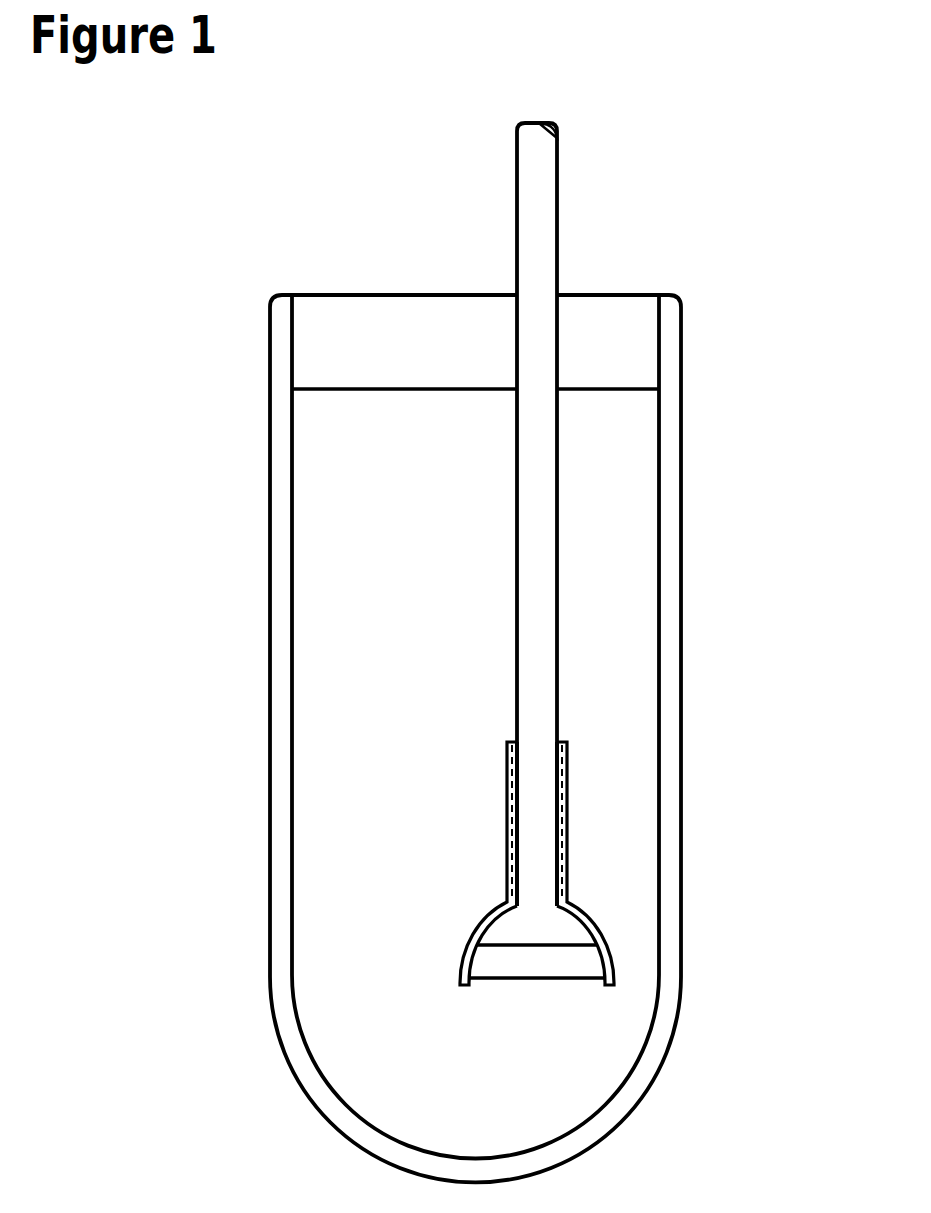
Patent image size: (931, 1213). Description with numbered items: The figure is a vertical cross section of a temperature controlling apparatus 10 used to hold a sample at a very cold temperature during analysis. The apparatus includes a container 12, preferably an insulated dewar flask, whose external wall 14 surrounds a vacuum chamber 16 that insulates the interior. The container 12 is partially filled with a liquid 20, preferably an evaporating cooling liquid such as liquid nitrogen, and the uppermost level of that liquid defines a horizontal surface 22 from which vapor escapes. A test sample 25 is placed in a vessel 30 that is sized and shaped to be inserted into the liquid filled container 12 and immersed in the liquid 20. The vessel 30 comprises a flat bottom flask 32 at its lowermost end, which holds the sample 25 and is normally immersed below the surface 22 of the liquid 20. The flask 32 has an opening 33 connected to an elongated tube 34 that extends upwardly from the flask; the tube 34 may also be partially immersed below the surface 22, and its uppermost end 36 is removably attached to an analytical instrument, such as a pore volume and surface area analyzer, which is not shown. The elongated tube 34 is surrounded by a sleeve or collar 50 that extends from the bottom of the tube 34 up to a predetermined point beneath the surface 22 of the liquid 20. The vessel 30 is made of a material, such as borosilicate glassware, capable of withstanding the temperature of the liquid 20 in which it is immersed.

The temperature controlling apparatus 10 is at (256, 362).
The container 12 is at (682, 512).
The external wall 14 is at (271, 618).
The vacuum chamber 16 is at (279, 545).
The liquid 20 is at (371, 472).
The horizontal surface 22 is at (557, 390).
The test sample 25 is at (531, 957).
The vessel 30 is at (532, 842).
The flat bottom flask 32 is at (612, 958).
The opening 33 is at (562, 885).
The elongated tube 34 is at (533, 768).
The uppermost end 36 is at (536, 252).
The sleeve or collar 50 is at (505, 767).